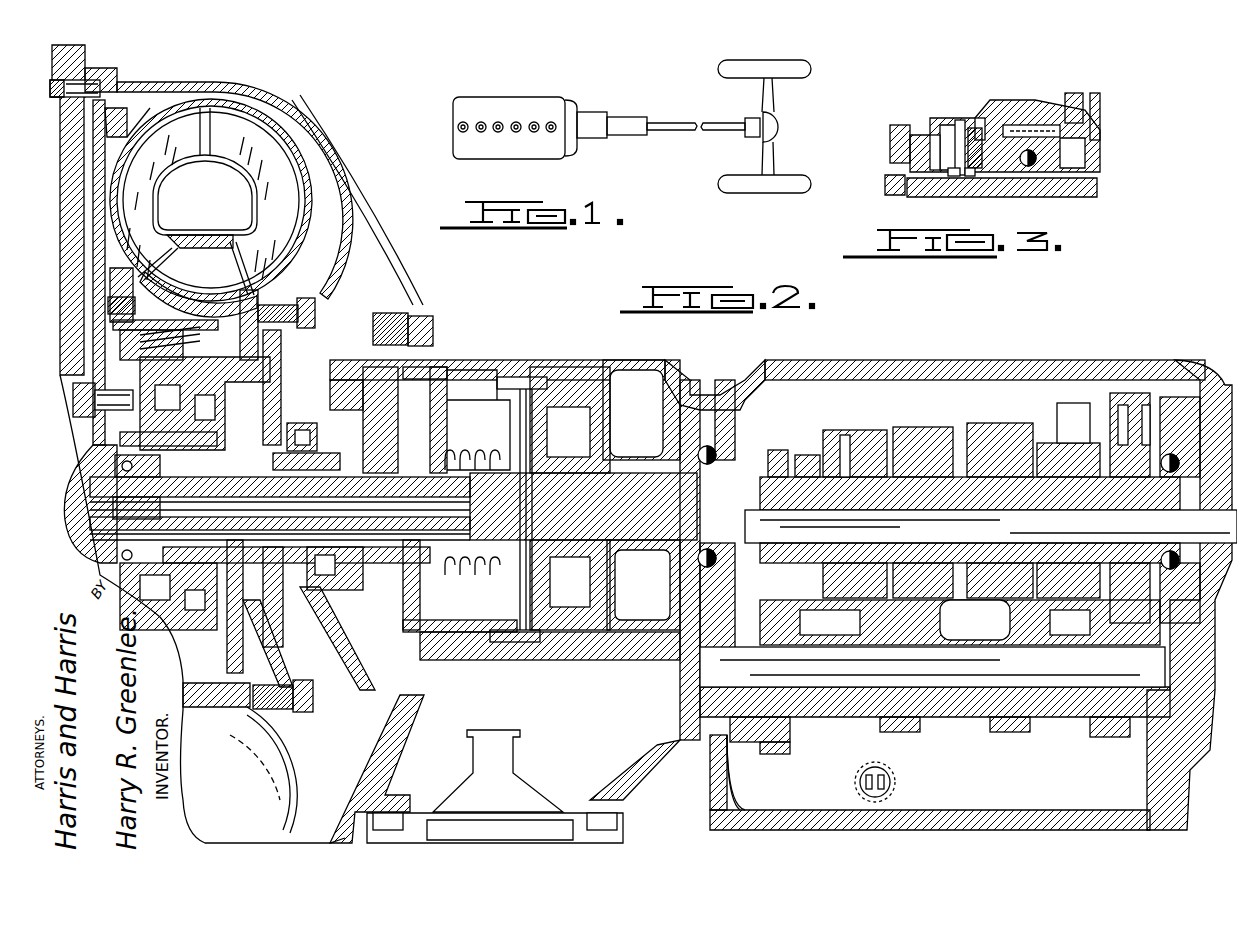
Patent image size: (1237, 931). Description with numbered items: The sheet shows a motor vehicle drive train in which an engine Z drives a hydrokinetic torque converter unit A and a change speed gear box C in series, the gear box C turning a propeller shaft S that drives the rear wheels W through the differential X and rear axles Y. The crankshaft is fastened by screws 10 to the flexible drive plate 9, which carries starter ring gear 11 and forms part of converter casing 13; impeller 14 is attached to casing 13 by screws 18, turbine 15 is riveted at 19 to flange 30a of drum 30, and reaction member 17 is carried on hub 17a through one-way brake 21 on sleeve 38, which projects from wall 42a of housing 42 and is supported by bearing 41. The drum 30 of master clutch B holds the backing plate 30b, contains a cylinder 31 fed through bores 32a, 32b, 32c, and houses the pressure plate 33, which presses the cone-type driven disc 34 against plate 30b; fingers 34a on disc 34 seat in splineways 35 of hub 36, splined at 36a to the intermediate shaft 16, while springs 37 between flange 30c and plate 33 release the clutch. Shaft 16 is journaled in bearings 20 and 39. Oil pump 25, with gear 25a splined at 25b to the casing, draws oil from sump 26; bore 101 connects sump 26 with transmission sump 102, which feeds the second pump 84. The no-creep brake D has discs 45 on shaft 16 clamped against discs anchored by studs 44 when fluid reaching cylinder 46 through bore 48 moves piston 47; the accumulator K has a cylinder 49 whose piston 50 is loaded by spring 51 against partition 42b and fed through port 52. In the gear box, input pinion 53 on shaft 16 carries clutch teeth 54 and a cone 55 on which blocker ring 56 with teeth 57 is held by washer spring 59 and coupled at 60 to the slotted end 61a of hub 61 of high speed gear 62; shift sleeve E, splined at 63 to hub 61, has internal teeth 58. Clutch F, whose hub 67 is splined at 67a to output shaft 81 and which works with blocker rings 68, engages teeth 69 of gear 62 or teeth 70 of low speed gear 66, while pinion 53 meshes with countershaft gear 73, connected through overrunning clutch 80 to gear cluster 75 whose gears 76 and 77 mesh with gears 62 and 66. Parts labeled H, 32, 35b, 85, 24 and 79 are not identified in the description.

In FIG. 1, the engine Z is at (498, 100).
In FIG. 1, the hydraulic torque converter unit H is at (575, 108).
In FIG. 1, the change speed gear box C is at (628, 114).
In FIG. 2, the change speed gear box C is at (970, 357).
In FIG. 1, the propeller shaft S is at (668, 123).
In FIG. 1, the differential X is at (778, 125).
In FIG. 1, the rear driving axles Y is at (776, 150).
In FIG. 1, the rear wheels W is at (808, 180).
In FIG. 2, the drive transmitting plate 9 is at (93, 328).
In FIG. 2, the rivet means 19 is at (108, 305).
In FIG. 2, the converter casing 13 is at (235, 100).
In FIG. 2, the engine starter ring gear 11 is at (130, 100).
In FIG. 2, the torque converter unit A is at (298, 128).
In FIG. 2, the impeller 14 is at (245, 207).
In FIG. 2, the turbine 15 is at (150, 185).
In FIG. 2, the reaction member 17 is at (215, 262).
In FIG. 2, the flange portion 30a is at (180, 290).
In FIG. 2, the screw means 18 is at (316, 312).
In FIG. 2, the guide wheel hub portion 17a is at (262, 360).
In FIG. 2, the clutch backing plate 30b is at (140, 343).
In FIG. 2, the clutch driven disc 34 is at (165, 360).
In FIG. 2, the master clutch unit B is at (95, 560).
In FIG. 2, the drum member 30 is at (205, 405).
In FIG. 2, the pressure fluid receiving cylinder 31 is at (205, 388).
In FIG. 2, the pressure plate 33 is at (170, 420).
In FIG. 2, the oil pump 25 is at (285, 420).
In FIG. 2, the one-way brake device 21 is at (292, 423).
In FIG. 2, the screw means 10 is at (73, 408).
In FIG. 2, the offset finger elements 34a is at (120, 436).
In FIG. 2, the sleeve shaft 32 is at (215, 452).
In FIG. 2, the hub member 36 is at (115, 452).
In FIG. 2, the bearing 20 is at (110, 490).
In FIG. 2, the splined connection 36a is at (136, 508).
In FIG. 2, the bearing 41 is at (280, 521).
In FIG. 2, the bore 32c is at (236, 489).
In FIG. 2, the splineways 35 is at (289, 489).
In FIG. 2, the bore 32b is at (326, 489).
In FIG. 2, the bore 32a is at (392, 489).
In FIG. 2, the bushing 35b is at (342, 525).
In FIG. 2, the splined means 25b is at (379, 525).
In FIG. 2, the compression spring means 37 is at (165, 580).
In FIG. 2, the driving gear 25a is at (335, 573).
In FIG. 2, the flange 30c is at (265, 650).
In FIG. 2, the wall 42a is at (350, 650).
In FIG. 2, the sump 26 is at (615, 792).
In FIG. 2, the cylinder 49 is at (425, 680).
In FIG. 2, the no-creep brake device D is at (506, 649).
In FIG. 2, the bore 101 is at (665, 742).
In FIG. 2, the bearing 39 is at (547, 428).
In FIG. 2, the housing 42 is at (460, 368).
In FIG. 2, the studs 44 is at (522, 378).
In FIG. 2, the piston element 50 is at (440, 395).
In FIG. 2, the supply port 52 is at (440, 412).
In FIG. 2, the compression spring 51 is at (490, 440).
In FIG. 2, the bore 48 is at (589, 420).
In FIG. 2, the cylinder 46 is at (590, 442).
In FIG. 2, the intermediate driven shaft 16 is at (583, 506).
In FIG. 2, the brake discs 45 is at (539, 492).
In FIG. 2, the piston 47 is at (570, 585).
In FIG. 2, the sleeve element 38 is at (671, 595).
In FIG. 2, the partition 42b is at (497, 600).
In FIG. 2, the pressure fluid accumulator device K is at (439, 609).
In FIG. 3, the hub 61 is at (1095, 148).
In FIG. 2, the hub 61 is at (970, 493).
In FIG. 3, the slotted forward end portion 61a is at (1010, 125).
In FIG. 2, the slotted forward end portion 61a is at (872, 495).
In FIG. 2, the splined connection 67a is at (1036, 495).
In FIG. 2, the high speed gear 62 is at (912, 428).
In FIG. 3, the internal teeth 58 is at (982, 128).
In FIG. 2, the internal teeth 58 is at (840, 445).
In FIG. 3, the blocker teeth 57 is at (958, 140).
In FIG. 2, the blocker teeth 57 is at (828, 448).
In FIG. 3, the input pinion 53 is at (890, 130).
In FIG. 2, the input pinion 53 is at (770, 450).
In FIG. 3, the shift sleeve clutch teeth 54 is at (937, 135).
In FIG. 2, the shift sleeve clutch teeth 54 is at (795, 455).
In FIG. 3, the clutch sleeve E is at (1038, 86).
In FIG. 2, the clutch sleeve E is at (849, 421).
In FIG. 2, the teeth 69 is at (950, 440).
In FIG. 2, the blocker synchronizing rings 68 is at (1032, 435).
In FIG. 2, the sleeve type clutch F is at (1008, 415).
In FIG. 2, the teeth 70 is at (1068, 500).
In FIG. 2, the low speed gear 66 is at (1066, 395).
In FIG. 2, the countershaft gear 73 is at (1120, 393).
In FIG. 2, the second pump 84 is at (1174, 432).
In FIG. 3, the output shaft 81 is at (905, 192).
In FIG. 2, the output shaft 81 is at (1159, 491).
In FIG. 2, the oil seal 85 is at (1190, 520).
In FIG. 3, the friction cone surface 55 is at (955, 176).
In FIG. 2, the friction cone surface 55 is at (790, 540).
In FIG. 2, the hub member 67 is at (1030, 640).
In FIG. 2, the countershaft 24 is at (932, 667).
In FIG. 2, the overrunning clutch 80 is at (790, 750).
In FIG. 2, the countershaft gear cluster 75 is at (770, 780).
In FIG. 2, the boss 79 is at (1000, 722).
In FIG. 2, the gear 77 is at (1080, 722).
In FIG. 2, the gear 76 is at (895, 780).
In FIG. 2, the transmission sump 102 is at (1048, 800).
In FIG. 3, the lost-motion lug and slot connection 60 is at (1010, 115).
In FIG. 3, the splines 63 is at (1045, 122).
In FIG. 3, the washer type spring 59 is at (1008, 168).
In FIG. 3, the blocker ring 56 is at (968, 176).